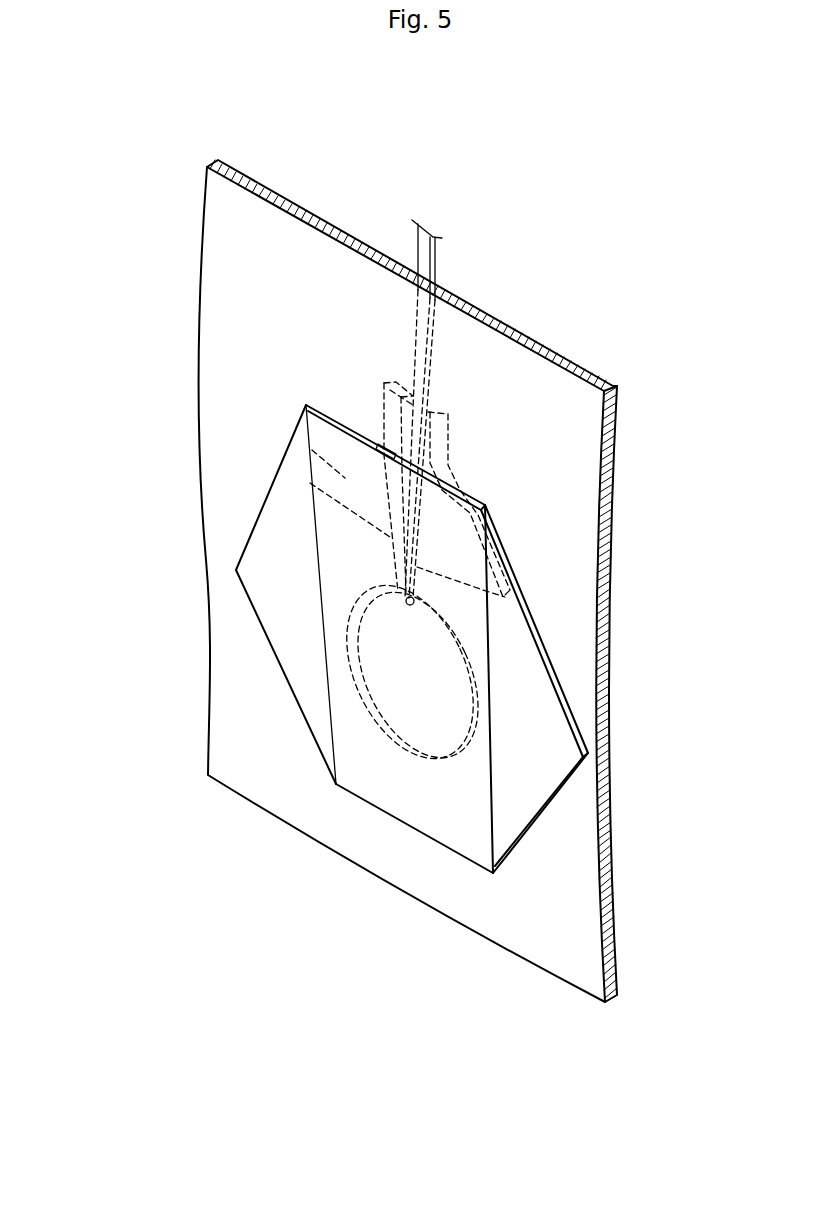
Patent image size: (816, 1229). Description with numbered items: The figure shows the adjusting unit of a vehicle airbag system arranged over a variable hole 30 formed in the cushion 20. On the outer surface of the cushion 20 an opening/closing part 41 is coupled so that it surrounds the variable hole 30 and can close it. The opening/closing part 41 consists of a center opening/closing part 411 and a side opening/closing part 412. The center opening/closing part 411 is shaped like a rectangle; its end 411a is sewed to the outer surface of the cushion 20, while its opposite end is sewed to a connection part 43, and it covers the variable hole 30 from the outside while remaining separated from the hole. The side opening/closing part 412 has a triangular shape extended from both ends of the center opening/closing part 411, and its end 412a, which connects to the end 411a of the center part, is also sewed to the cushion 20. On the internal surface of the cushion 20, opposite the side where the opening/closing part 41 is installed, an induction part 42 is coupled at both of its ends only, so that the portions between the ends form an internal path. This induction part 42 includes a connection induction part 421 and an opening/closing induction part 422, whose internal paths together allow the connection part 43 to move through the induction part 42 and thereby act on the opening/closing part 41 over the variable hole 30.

The cushion 20 is at (585, 528).
The variable hole 30 is at (455, 685).
The opening/closing part 41 is at (330, 719).
The center opening/closing part 411 is at (353, 558).
The end of the center opening/closing part 411a is at (453, 852).
The side opening/closing part 412 is at (285, 630).
The end of the side opening/closing part 412a is at (528, 843).
The induction part 42 is at (284, 445).
The connection induction part 421 is at (383, 410).
The opening/closing induction part 422 is at (350, 477).
The connection part 43 is at (423, 257).